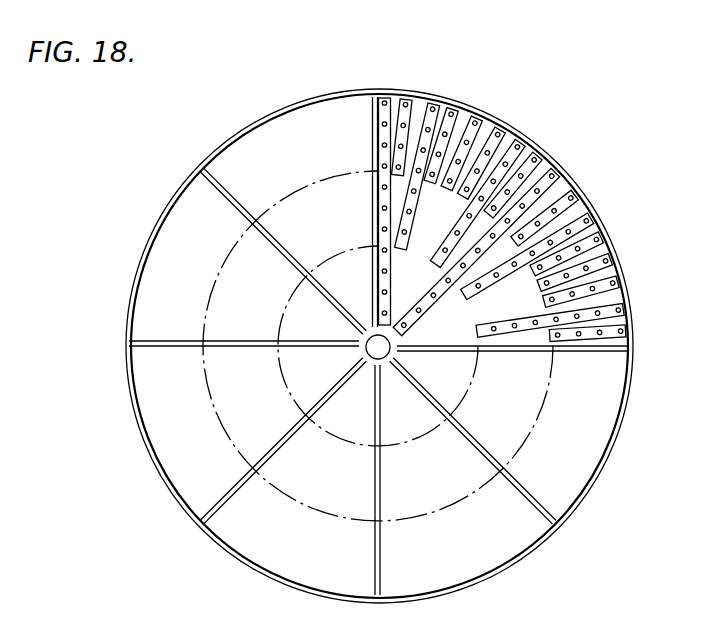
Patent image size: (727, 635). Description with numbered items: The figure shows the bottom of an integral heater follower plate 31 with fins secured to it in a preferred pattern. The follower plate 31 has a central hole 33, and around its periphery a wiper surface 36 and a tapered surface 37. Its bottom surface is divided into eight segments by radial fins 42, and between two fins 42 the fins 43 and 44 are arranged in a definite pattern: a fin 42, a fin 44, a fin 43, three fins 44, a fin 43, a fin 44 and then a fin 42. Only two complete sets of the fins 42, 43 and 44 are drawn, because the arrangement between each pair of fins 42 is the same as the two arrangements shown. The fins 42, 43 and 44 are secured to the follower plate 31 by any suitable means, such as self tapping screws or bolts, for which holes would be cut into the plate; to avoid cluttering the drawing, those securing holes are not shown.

The follower plate 31 is at (326, 83).
The hole 33 is at (366, 350).
The wiper surface 36 is at (633, 380).
The tapered surface 37 is at (615, 430).
The fin 42 is at (372, 129).
The fin 43 is at (430, 103).
The fin 44 is at (405, 100).